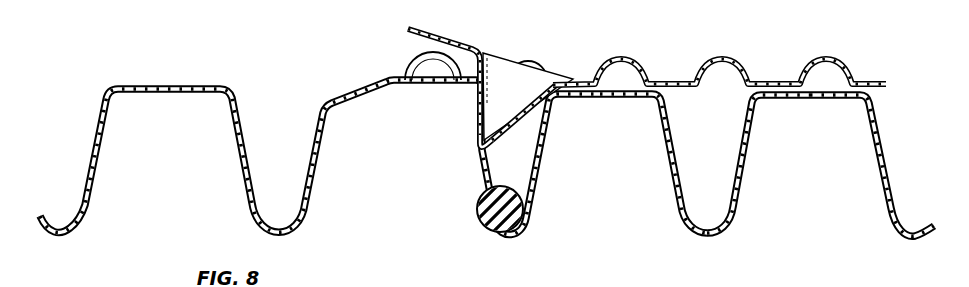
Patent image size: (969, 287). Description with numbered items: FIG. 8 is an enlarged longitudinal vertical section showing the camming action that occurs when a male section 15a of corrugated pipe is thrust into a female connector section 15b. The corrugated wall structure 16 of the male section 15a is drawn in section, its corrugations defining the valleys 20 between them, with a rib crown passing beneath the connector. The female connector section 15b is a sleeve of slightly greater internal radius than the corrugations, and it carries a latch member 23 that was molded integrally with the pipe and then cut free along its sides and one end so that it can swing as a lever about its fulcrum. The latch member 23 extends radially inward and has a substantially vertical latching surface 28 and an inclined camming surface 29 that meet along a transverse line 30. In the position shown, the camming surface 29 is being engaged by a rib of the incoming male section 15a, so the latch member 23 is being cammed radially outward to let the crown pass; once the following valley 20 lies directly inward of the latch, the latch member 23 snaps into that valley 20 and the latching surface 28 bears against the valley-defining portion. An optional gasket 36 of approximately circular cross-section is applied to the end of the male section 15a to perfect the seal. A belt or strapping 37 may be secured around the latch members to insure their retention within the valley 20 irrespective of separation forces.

The male section 15a is at (662, 162).
The female connector section 15b is at (625, 47).
The wall structure 16 is at (546, 127).
The valley 20 is at (717, 165).
The latch member 23 is at (462, 143).
The latching surface 28 is at (476, 101).
The camming surface 29 is at (507, 117).
The transverse line 30 is at (478, 148).
The gasket 36 is at (484, 205).
The belt or strapping 37 is at (581, 286).